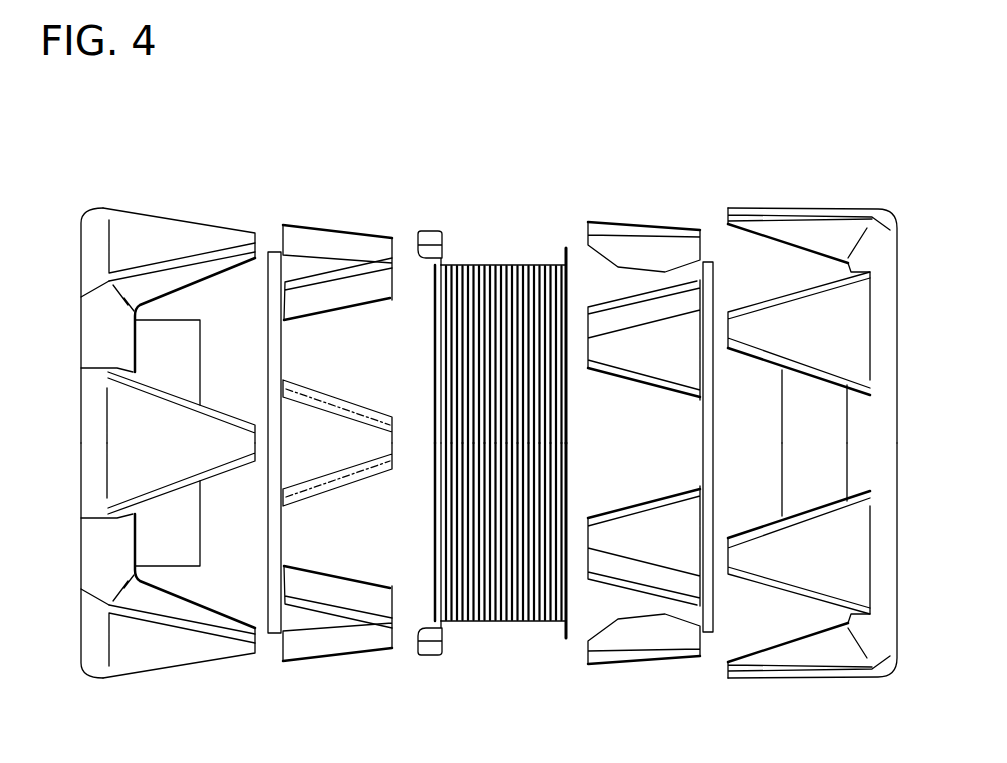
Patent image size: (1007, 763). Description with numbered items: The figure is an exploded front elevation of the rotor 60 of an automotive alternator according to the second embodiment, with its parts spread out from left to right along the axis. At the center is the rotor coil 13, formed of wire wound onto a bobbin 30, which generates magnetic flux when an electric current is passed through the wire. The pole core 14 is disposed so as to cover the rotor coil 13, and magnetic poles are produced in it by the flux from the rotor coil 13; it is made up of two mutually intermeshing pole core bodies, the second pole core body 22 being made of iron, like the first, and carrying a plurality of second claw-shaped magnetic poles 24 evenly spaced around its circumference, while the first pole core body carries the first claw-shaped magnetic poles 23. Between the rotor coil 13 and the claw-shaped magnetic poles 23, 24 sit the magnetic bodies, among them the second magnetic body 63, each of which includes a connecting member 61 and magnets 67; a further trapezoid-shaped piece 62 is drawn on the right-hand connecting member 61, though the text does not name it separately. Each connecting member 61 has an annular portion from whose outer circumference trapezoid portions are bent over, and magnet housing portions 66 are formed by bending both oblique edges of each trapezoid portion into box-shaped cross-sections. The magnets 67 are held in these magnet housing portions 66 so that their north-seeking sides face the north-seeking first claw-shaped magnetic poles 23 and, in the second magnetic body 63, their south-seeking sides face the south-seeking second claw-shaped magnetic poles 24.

The rotor coil 13 is at (508, 265).
The pole core 14 is at (791, 209).
The second pole core body 22 is at (185, 650).
The first claw-shaped magnetic poles 23 is at (764, 322).
The second claw-shaped magnetic poles 24 is at (181, 232).
The bobbin 30 is at (430, 490).
The rotor 60 is at (473, 145).
The connecting member 61 is at (270, 351).
The pole piece 62 is at (647, 226).
The second magnetic body 63 is at (337, 233).
The magnet housing portions 66 is at (322, 298).
The magnets 67 is at (342, 392).